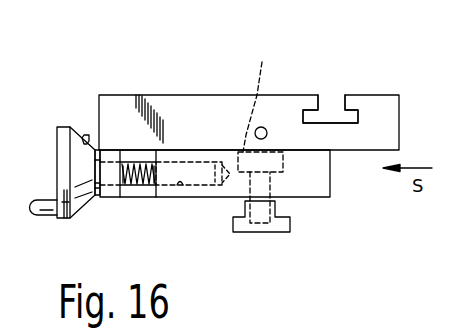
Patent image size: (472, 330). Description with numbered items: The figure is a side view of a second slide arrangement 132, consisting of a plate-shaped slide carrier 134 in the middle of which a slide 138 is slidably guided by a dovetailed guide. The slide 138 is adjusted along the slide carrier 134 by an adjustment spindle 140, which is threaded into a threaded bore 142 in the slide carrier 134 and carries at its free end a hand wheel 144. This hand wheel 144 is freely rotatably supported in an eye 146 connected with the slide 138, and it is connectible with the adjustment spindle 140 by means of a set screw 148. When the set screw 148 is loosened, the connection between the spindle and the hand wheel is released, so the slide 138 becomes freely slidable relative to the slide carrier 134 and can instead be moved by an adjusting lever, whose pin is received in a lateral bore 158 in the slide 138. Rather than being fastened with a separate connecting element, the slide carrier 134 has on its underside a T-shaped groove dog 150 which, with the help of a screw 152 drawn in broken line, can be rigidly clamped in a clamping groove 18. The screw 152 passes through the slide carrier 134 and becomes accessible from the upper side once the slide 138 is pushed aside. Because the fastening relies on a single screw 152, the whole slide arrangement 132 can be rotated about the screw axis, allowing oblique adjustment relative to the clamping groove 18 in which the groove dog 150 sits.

The second slide arrangement 132 is at (190, 88).
The slide 138 is at (118, 112).
The clamping groove 18 is at (333, 110).
The lateral bore 158 is at (263, 127).
The screw 152 is at (260, 129).
The slide carrier 134 is at (323, 177).
The T-shaped groove dog 150 is at (265, 232).
The eye 146 is at (113, 183).
The adjustment spindle 140 is at (138, 187).
The threaded bore 142 is at (182, 187).
The hand wheel 144 is at (73, 217).
The set screw 148 is at (84, 133).